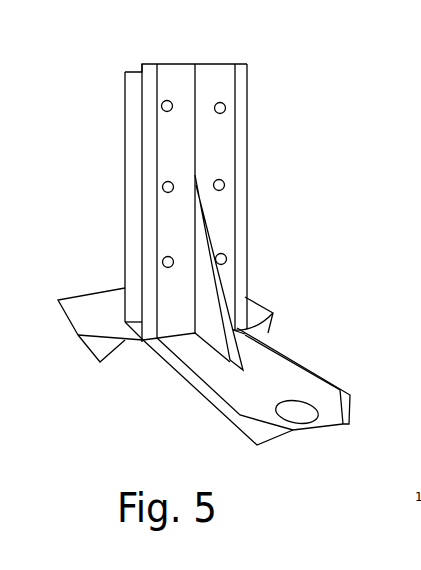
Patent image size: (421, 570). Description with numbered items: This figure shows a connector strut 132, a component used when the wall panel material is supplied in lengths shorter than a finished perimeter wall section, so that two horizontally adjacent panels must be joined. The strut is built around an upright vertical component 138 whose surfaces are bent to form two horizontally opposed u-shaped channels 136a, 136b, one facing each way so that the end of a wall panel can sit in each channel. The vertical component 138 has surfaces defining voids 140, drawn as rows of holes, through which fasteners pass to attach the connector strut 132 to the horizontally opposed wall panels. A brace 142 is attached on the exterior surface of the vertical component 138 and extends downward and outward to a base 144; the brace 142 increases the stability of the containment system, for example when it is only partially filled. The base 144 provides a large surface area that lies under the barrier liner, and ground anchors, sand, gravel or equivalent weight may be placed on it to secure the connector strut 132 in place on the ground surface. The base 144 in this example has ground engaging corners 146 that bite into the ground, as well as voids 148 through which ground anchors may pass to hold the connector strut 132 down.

The connector strut 132 is at (245, 218).
The u-shaped channel 136a is at (257, 82).
The u-shaped channel 136b is at (113, 92).
The vertical component 138 is at (245, 183).
The voids 140 is at (226, 110).
The brace 142 is at (245, 273).
The base 144 is at (88, 297).
The ground engaging corners 146 is at (95, 355).
The voids 148 is at (305, 387).